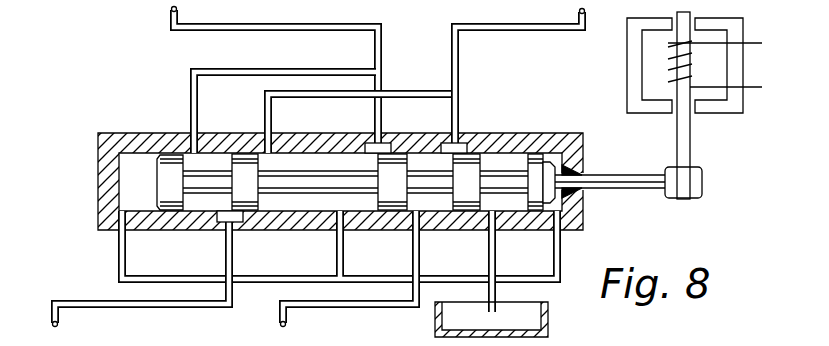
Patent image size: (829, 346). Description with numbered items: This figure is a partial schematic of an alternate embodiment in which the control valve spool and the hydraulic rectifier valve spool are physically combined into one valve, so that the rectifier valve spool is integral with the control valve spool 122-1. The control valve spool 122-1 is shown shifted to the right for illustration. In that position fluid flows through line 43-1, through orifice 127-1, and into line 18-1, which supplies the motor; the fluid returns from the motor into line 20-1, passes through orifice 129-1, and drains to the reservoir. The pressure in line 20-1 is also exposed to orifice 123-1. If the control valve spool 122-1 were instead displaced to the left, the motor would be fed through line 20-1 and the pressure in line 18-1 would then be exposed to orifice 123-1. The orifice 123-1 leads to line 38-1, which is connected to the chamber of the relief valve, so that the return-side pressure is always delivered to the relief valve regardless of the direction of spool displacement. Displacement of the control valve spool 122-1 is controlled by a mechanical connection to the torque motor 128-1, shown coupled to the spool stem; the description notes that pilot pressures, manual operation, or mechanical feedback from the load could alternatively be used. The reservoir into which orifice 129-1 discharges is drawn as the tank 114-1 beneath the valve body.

The line 20-1 is at (260, 74).
The line 18-1 is at (540, 74).
The line 38-1 is at (130, 284).
The line 43-1 is at (336, 278).
The reservoir / sump 114-1 is at (548, 336).
The control valve spool 122-1 is at (514, 178).
The orifice 123-1 is at (238, 223).
The orifice 127-1 is at (466, 141).
The orifice 129-1 is at (388, 141).
The torque motor 128-1 is at (741, 34).